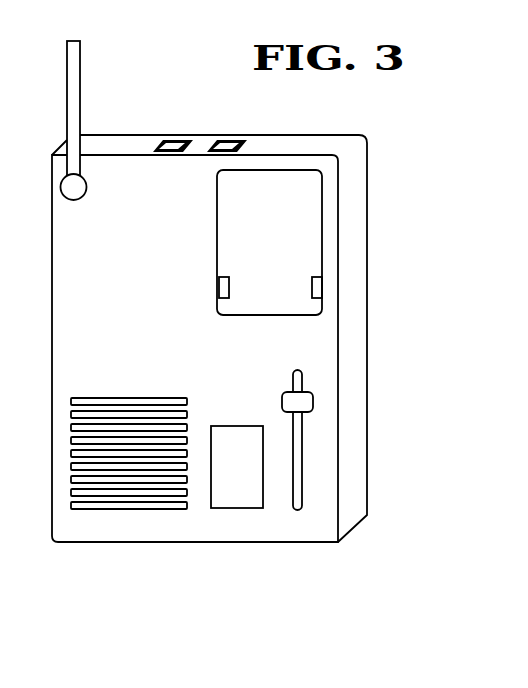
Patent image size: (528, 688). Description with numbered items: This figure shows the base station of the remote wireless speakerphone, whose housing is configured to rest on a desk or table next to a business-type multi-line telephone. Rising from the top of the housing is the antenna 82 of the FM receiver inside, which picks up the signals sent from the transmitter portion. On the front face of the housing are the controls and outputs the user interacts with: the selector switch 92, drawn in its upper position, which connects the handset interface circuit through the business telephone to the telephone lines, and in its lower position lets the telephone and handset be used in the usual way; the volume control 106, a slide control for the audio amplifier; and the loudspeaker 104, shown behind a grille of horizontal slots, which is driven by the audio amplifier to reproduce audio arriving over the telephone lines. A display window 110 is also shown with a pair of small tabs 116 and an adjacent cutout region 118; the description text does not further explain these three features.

The antenna 82 is at (80, 90).
The display screen 110 is at (322, 215).
The display tabs 116 is at (229, 289).
The display cutout 118 is at (311, 288).
The slide control 106 is at (300, 403).
The control panel 92 is at (237, 500).
The speaker grille 104 is at (118, 477).